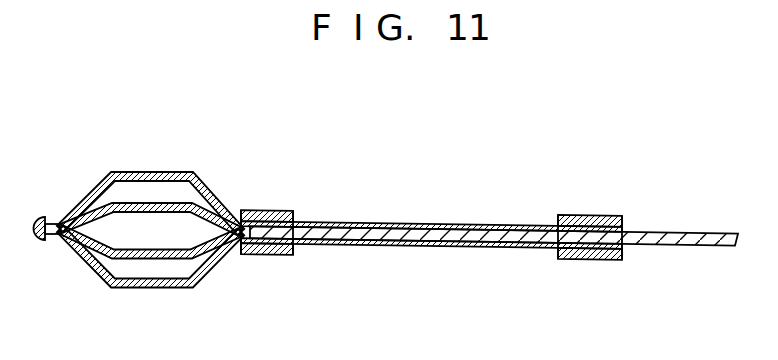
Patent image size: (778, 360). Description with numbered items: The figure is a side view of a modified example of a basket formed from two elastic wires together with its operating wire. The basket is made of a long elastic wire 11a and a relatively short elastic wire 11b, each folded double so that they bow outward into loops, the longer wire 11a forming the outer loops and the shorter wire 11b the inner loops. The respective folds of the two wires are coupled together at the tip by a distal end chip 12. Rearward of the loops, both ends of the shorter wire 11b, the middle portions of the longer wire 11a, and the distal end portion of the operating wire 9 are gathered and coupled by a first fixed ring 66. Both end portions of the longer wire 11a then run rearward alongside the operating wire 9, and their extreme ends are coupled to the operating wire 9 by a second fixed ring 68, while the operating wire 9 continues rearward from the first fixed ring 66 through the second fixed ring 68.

The operating wire 9 is at (682, 233).
The long elastic wire 11a is at (152, 172).
The short elastic wire 11b is at (150, 211).
The distal end chip 12 is at (42, 216).
The first fixed ring 66 is at (264, 211).
The second fixed ring 68 is at (584, 215).